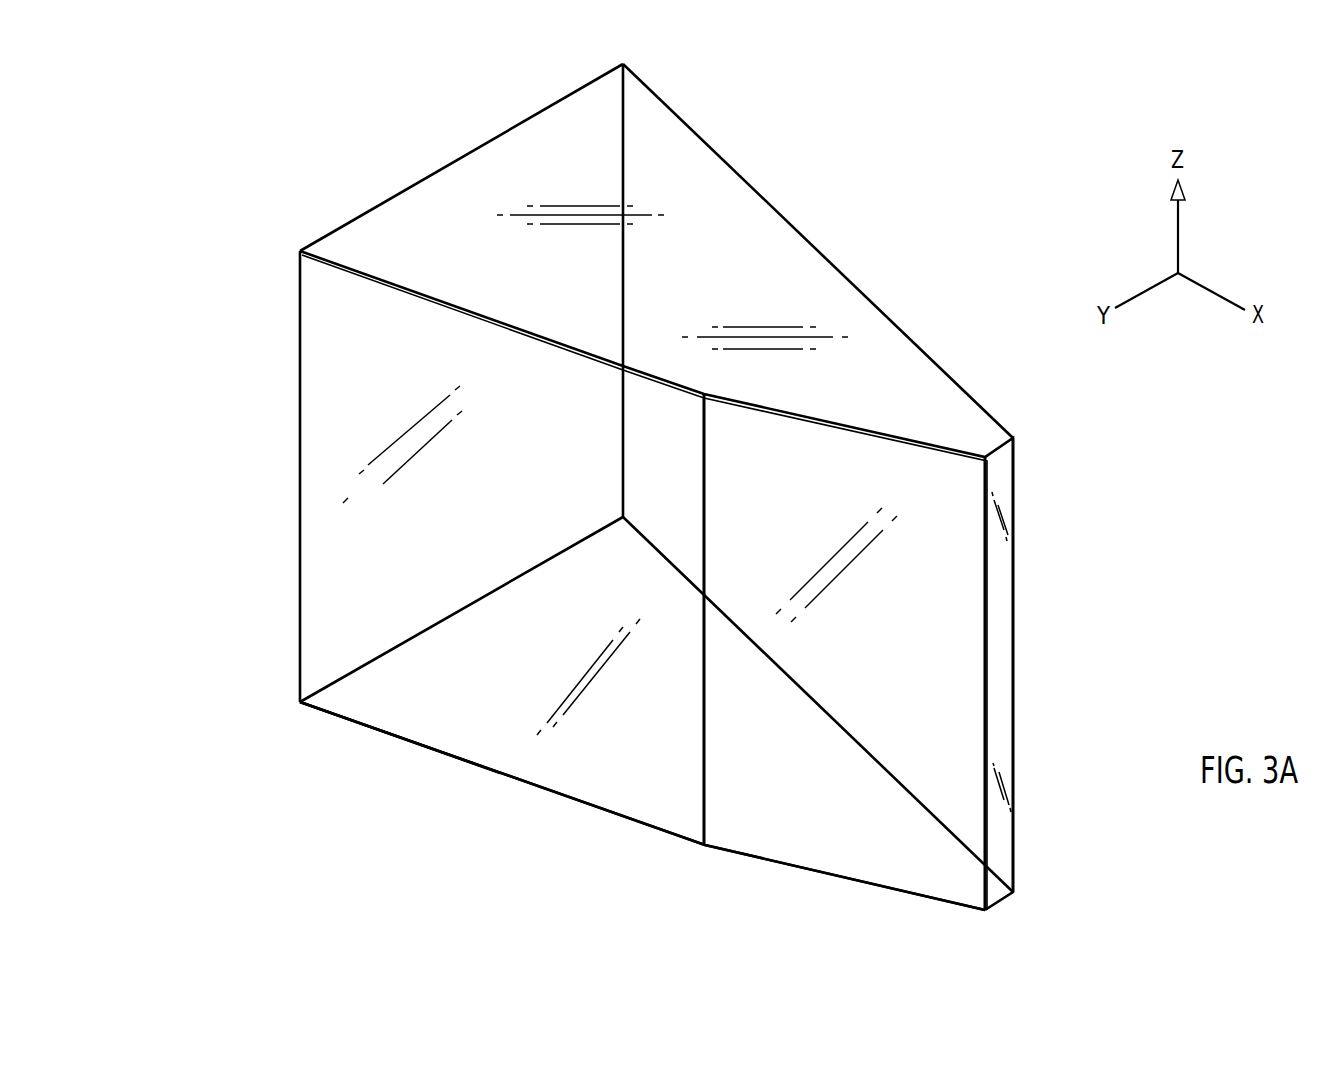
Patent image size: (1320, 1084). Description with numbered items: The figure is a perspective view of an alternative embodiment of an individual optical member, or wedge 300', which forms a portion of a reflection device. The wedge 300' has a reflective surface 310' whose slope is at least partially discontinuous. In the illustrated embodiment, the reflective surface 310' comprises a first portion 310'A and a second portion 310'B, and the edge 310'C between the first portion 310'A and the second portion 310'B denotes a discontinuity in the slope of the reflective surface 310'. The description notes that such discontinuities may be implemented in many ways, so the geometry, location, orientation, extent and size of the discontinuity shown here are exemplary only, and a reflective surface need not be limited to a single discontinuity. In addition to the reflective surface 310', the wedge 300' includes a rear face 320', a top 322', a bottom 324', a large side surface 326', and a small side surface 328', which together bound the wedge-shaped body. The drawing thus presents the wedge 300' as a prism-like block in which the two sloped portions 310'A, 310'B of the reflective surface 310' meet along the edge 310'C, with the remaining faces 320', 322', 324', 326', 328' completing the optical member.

The wedge 300' is at (564, 487).
The reflective surface 310' is at (638, 806).
The first portion 310'A is at (556, 738).
The second portion 310'B is at (813, 718).
The edge 310'C is at (634, 641).
The rear face 320' is at (783, 259).
The top 322' is at (471, 189).
The bottom 324' is at (400, 742).
The large side surface 326' is at (331, 410).
The small side surface 328' is at (1053, 674).